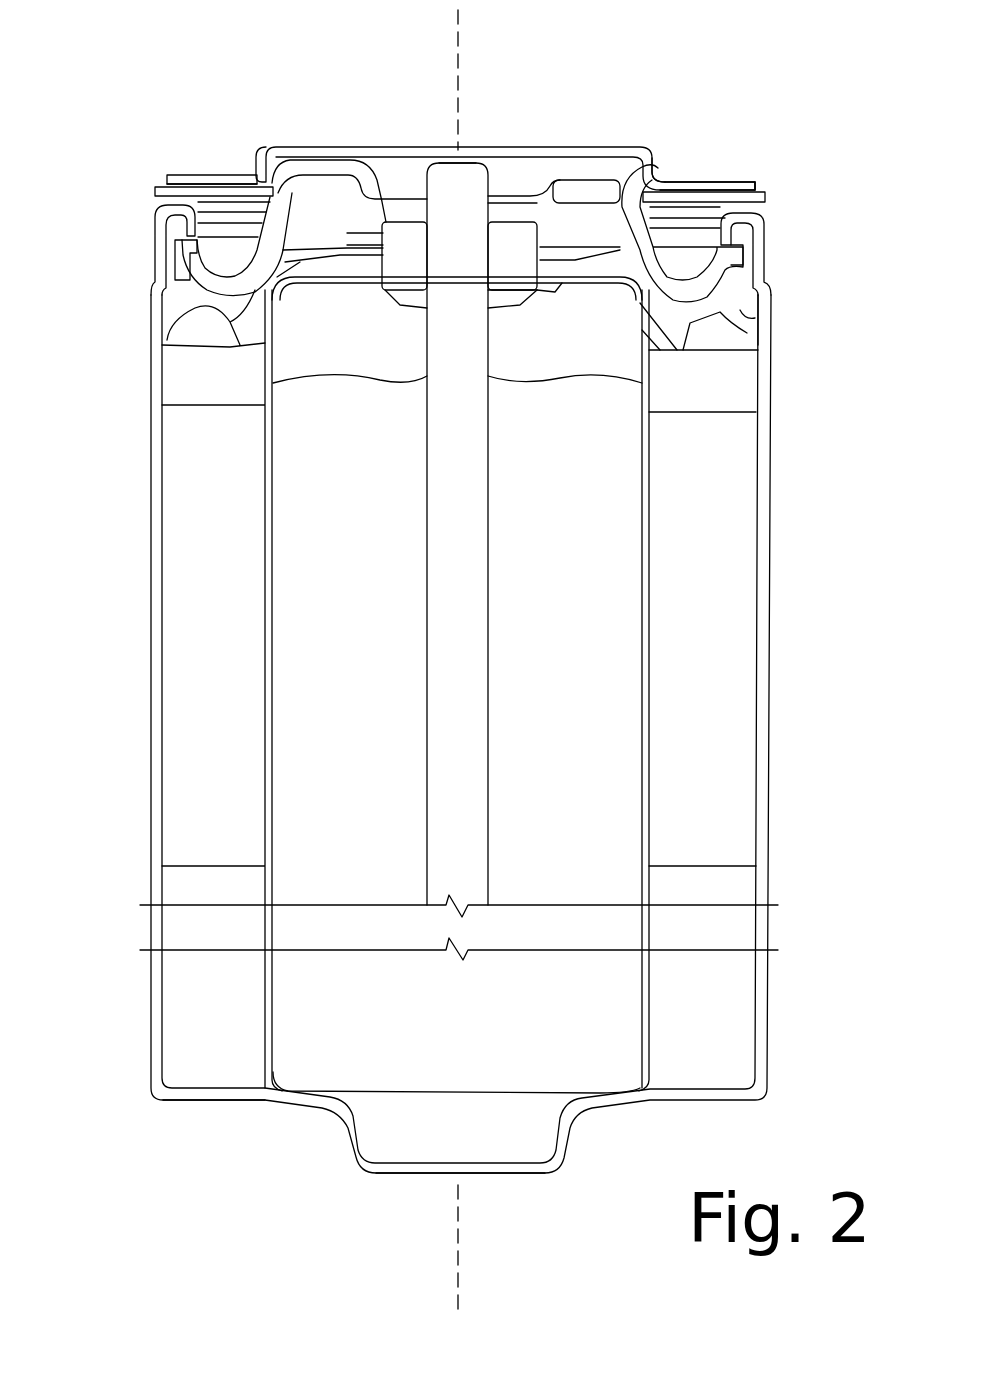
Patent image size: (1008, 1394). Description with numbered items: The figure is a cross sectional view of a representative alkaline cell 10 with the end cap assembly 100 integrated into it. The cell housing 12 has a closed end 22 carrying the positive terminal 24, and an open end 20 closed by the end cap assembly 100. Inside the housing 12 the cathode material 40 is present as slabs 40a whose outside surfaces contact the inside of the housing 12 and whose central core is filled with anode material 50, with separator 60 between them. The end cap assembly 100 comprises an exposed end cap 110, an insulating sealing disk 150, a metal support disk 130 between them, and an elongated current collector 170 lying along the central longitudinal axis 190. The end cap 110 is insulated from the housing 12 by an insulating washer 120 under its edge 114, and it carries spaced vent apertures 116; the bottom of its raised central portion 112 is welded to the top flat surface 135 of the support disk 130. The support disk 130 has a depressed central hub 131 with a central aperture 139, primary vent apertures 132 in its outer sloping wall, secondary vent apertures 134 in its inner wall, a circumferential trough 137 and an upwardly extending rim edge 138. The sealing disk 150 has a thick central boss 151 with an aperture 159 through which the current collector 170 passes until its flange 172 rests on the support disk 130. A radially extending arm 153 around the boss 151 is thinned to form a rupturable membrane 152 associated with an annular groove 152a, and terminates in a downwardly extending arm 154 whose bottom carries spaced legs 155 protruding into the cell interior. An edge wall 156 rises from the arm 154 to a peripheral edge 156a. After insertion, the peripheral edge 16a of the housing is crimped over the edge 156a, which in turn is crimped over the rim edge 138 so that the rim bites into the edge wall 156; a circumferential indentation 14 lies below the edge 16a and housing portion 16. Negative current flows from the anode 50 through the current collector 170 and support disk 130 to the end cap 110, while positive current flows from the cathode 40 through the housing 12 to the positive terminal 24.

The alkaline cell 10 is at (115, 79).
The cell housing 12 is at (151, 452).
The circumferential indentation 14 is at (762, 301).
The housing portion 16 is at (767, 268).
The peripheral edge of housing 16a is at (760, 213).
The open end of cell housing 20 is at (225, 247).
The housing closed end 22 is at (212, 1102).
The positive terminal 24 is at (388, 1174).
The cathode material 40 is at (195, 502).
The cathode slab 40a is at (185, 557).
The anode material 50 is at (576, 882).
The separator 60 is at (287, 1068).
The end cap assembly 100 is at (728, 173).
The end cap 110 is at (740, 180).
The raised central portion of end cap 112 is at (336, 146).
The edge of end cap 114 is at (228, 175).
The vent apertures of end cap 116 is at (663, 174).
The insulating washer 120 is at (156, 194).
The metal support disk 130 is at (641, 160).
The depressed central hub 131 is at (513, 197).
The primary vent apertures 132 is at (620, 240).
The secondary vent apertures 134 is at (393, 178).
The top flat surface 135 is at (590, 160).
The circumferential trough 137 is at (207, 283).
The rim edge 138 is at (175, 257).
The central aperture 139 is at (490, 200).
The insulating sealing disk 150 is at (760, 331).
The central boss 151 is at (530, 285).
The rupturable membrane 152 is at (370, 265).
The annular groove 152a is at (362, 268).
The radially extending arm 153 is at (590, 277).
The downwardly extending arm 154 is at (642, 303).
The legs 155 is at (240, 345).
The edge wall 156 is at (173, 273).
The peripheral edge of sealing disk 156a is at (176, 230).
The boss aperture 159 is at (500, 300).
The current collector 170 is at (467, 893).
The flange 172 is at (420, 302).
The central longitudinal axis 190 is at (463, 30).